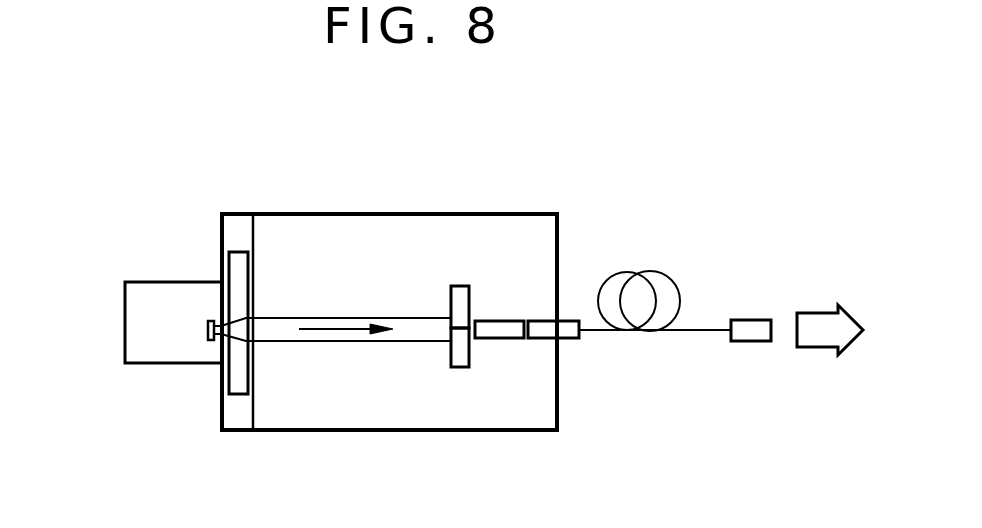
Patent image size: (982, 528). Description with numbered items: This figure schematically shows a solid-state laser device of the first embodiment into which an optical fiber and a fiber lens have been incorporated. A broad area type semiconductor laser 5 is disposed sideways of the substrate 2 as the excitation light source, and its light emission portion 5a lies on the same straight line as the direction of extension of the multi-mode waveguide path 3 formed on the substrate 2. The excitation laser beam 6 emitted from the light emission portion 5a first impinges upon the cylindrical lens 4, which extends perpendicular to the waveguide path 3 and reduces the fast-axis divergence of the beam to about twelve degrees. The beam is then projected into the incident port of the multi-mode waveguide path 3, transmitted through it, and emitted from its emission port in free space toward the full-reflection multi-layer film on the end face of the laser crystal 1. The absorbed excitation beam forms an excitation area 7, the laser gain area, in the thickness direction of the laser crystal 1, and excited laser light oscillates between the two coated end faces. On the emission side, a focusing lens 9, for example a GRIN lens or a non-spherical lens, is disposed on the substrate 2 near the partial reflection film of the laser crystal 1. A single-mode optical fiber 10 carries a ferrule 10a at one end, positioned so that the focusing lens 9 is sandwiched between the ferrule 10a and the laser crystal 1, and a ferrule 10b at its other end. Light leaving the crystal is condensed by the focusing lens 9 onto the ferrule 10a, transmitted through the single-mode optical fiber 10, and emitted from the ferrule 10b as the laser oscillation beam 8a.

The laser crystal 1 is at (458, 286).
The substrate 2 is at (530, 228).
The multi-mode waveguide path 3 is at (413, 333).
The cylindrical lens 4 is at (235, 387).
The semiconductor laser 5 is at (133, 312).
The light emission portion 5a is at (212, 320).
The excitation laser beam 6 is at (339, 327).
The excitation area 7 is at (458, 332).
The laser oscillation beam 8a is at (817, 313).
The focusing lens 9 is at (503, 323).
The single-mode optical fiber 10 is at (710, 333).
The ferrule 10a is at (568, 335).
The ferrule 10b is at (753, 320).